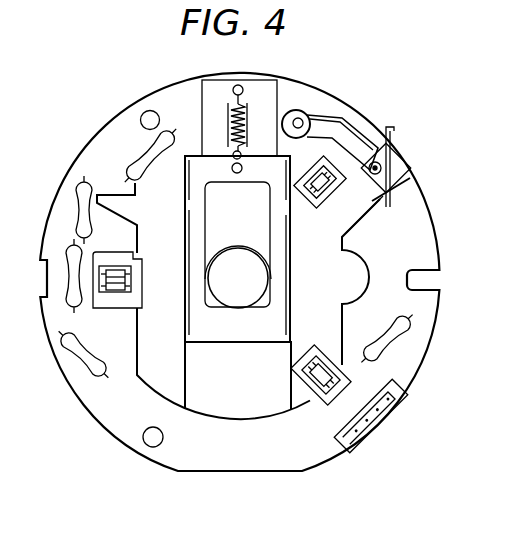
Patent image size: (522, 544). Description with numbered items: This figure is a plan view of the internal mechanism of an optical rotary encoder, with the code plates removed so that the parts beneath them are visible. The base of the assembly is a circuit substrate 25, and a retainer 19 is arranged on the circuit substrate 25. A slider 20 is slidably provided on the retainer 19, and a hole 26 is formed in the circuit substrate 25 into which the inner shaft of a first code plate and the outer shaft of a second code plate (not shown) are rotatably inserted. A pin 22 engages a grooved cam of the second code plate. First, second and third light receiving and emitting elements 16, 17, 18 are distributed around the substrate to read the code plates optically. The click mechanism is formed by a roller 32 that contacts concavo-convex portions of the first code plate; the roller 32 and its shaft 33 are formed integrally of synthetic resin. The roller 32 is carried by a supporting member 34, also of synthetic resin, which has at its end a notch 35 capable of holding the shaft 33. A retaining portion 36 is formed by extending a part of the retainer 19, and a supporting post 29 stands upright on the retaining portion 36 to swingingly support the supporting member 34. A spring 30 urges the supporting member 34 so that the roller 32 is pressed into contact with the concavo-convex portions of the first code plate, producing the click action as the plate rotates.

The first light receiving and emitting element 16 is at (333, 198).
The second light receiving and emitting element 17 is at (350, 378).
The third light receiving and emitting element 18 is at (109, 293).
The retainer 19 is at (147, 388).
The slider 20 is at (260, 343).
The pin 22 is at (232, 168).
The circuit substrate 25 is at (239, 471).
The hole 26 is at (223, 300).
The supporting post 29 is at (406, 160).
The spring 30 is at (394, 130).
The roller 32 is at (300, 109).
The shaft 33 is at (318, 116).
The supporting member 34 is at (360, 118).
The notch 35 is at (339, 118).
The retaining portion 36 is at (418, 187).